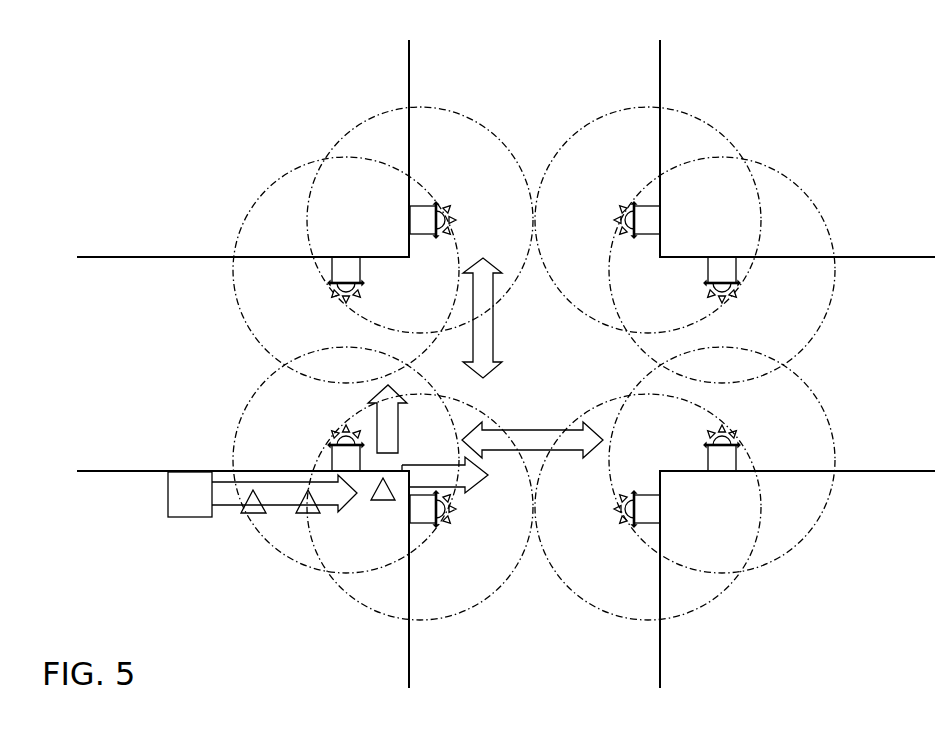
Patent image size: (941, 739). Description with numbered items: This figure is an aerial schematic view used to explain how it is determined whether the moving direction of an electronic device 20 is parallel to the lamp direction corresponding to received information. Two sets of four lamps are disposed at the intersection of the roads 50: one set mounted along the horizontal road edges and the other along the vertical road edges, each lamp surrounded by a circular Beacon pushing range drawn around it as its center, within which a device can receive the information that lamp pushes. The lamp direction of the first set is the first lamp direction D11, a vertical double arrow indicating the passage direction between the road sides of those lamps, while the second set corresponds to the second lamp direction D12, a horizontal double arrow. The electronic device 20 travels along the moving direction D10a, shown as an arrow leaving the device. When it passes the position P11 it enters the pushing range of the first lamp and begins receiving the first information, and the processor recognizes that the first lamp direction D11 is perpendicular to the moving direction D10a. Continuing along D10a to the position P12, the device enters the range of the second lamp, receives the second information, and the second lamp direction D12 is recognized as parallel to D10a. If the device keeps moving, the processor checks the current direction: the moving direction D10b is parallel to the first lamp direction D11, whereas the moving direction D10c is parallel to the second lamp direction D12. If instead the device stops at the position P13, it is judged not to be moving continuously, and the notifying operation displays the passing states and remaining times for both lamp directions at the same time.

The roads 50 is at (117, 385).
The electronic device 20 is at (190, 494).
The moving direction D10a is at (277, 490).
The moving direction D10b is at (388, 429).
The moving direction D10c is at (448, 477).
The first lamp direction D11 is at (487, 330).
The second lamp direction D12 is at (538, 435).
The position P11 is at (250, 517).
The position P12 is at (307, 517).
The position P13 is at (380, 503).